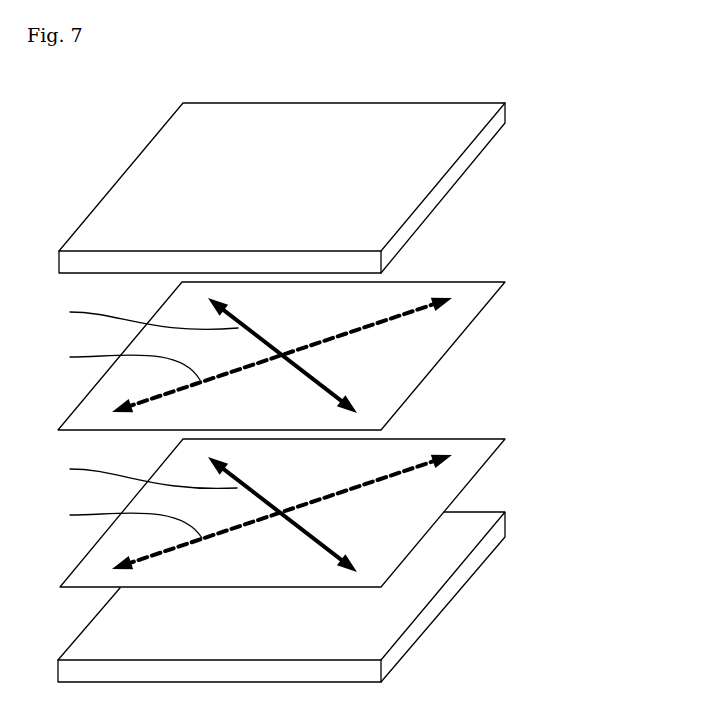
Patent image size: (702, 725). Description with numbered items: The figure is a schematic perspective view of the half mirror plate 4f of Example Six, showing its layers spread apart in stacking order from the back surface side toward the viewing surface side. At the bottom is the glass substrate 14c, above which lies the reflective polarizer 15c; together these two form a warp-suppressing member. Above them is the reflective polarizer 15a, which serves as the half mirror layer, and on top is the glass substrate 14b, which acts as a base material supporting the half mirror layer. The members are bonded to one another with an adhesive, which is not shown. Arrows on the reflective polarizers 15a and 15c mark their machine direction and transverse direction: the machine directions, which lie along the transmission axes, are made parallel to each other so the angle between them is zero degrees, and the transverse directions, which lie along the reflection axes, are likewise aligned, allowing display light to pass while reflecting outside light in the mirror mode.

The half mirror plate 4f is at (102, 124).
The glass substrate 14b is at (455, 133).
The reflective polarizer 15a is at (455, 322).
The reflective polarizer 15c is at (455, 480).
The glass substrate 14c is at (455, 545).